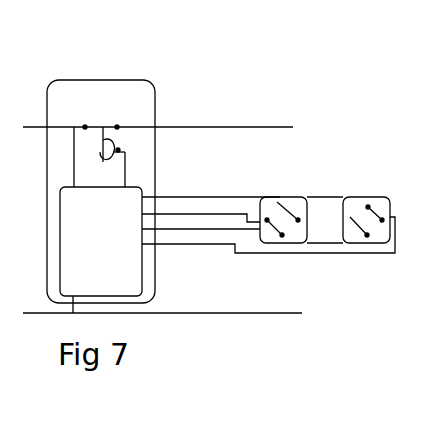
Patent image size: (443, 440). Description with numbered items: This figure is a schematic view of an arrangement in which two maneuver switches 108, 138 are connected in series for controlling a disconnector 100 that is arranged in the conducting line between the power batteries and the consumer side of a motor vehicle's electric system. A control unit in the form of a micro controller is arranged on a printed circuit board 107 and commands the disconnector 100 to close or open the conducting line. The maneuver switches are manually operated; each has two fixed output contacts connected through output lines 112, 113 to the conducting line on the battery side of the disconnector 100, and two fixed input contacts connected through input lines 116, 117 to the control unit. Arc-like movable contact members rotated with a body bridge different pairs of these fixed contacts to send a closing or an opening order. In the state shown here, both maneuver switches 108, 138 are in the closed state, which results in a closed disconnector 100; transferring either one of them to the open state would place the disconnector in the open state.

The disconnector 100 is at (93, 129).
The printed circuit board 107 is at (142, 202).
The output line 112 is at (190, 196).
The output line 113 is at (213, 213).
The input line 117 is at (216, 230).
The input line 116 is at (213, 246).
The maneuver switch 108 is at (297, 200).
The maneuver switch 138 is at (373, 200).